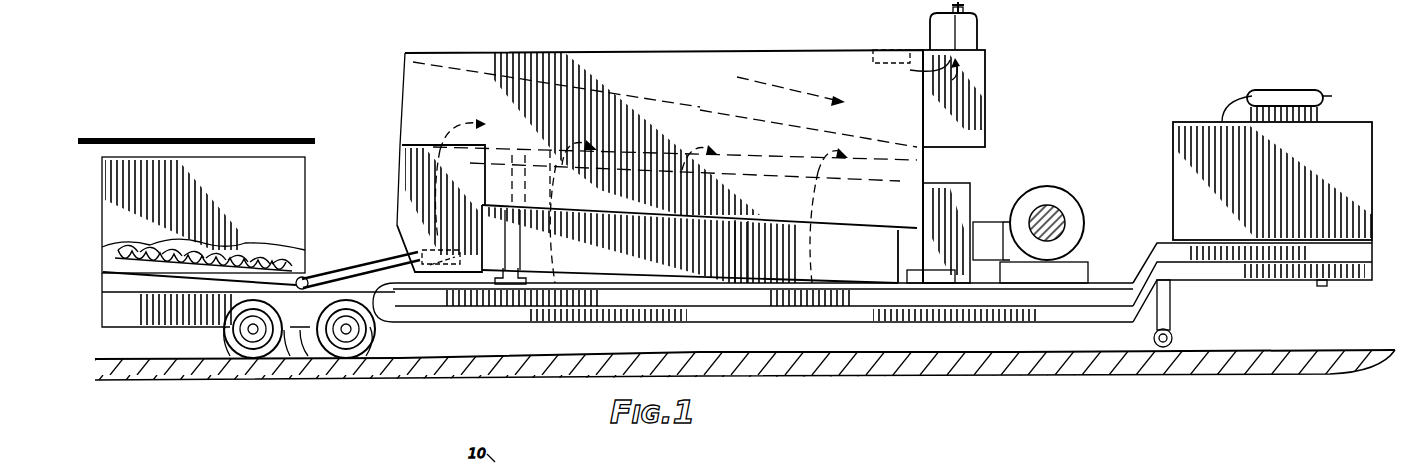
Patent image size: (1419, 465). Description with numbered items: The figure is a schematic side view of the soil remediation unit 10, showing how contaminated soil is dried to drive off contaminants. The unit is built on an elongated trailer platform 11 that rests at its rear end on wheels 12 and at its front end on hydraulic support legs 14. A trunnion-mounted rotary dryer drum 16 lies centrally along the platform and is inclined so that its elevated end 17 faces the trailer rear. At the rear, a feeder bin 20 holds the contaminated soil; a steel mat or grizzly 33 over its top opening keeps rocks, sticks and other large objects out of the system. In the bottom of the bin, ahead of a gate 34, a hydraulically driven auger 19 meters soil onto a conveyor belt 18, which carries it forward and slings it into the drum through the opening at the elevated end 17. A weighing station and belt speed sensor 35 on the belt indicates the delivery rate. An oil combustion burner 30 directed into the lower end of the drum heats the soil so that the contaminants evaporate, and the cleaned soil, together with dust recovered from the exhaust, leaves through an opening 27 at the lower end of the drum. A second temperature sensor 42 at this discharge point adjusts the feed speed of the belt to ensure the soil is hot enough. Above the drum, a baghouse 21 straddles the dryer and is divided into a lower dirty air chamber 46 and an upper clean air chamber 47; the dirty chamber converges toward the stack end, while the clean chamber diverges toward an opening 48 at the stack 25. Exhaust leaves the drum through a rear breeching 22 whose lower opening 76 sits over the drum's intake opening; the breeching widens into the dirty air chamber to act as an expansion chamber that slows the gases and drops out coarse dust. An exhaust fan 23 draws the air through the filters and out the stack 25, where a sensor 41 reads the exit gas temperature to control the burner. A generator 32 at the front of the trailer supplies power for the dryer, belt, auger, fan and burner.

The unit 10 is at (343, 62).
The trailer platform 11 is at (1358, 272).
The wheels 12 is at (312, 350).
The hydraulic support legs 14 is at (1172, 312).
The rotary dryer drum 16 is at (713, 272).
The elevated end 17 is at (508, 286).
The conveyor belt 18 is at (372, 265).
The auger 19 is at (106, 282).
The feeder bin 20 is at (108, 208).
The baghouse 21 is at (682, 50).
The rear breeching 22 is at (438, 192).
The exhaust fan 23 is at (985, 100).
The stack 25 is at (930, 25).
The opening 27 is at (925, 284).
The oil combustion burner 30 is at (1080, 210).
The generator 32 is at (1372, 178).
The grizzly 33 is at (118, 124).
The gate 34 is at (284, 289).
The weighing station and belt speed sensor 35 is at (378, 300).
The sensor 41 is at (876, 50).
The second temperature sensor 42 is at (955, 286).
The dirty air chamber 46 is at (928, 157).
The clean air chamber 47 is at (507, 50).
The opening 48 is at (985, 48).
The lower opening 76 is at (430, 248).